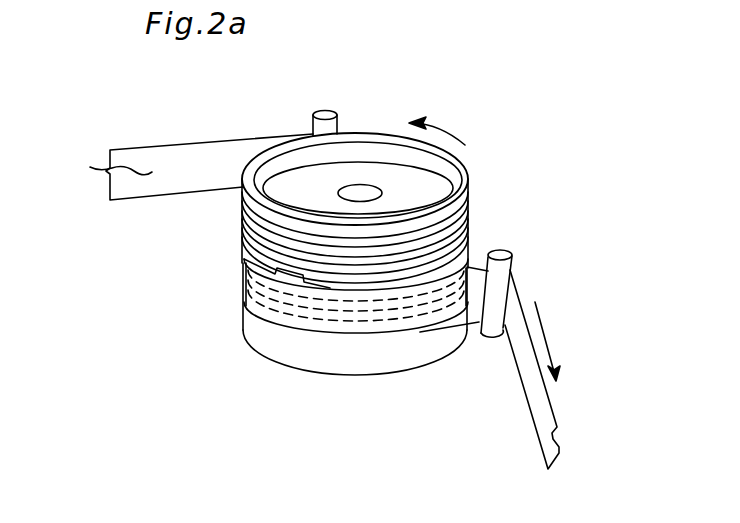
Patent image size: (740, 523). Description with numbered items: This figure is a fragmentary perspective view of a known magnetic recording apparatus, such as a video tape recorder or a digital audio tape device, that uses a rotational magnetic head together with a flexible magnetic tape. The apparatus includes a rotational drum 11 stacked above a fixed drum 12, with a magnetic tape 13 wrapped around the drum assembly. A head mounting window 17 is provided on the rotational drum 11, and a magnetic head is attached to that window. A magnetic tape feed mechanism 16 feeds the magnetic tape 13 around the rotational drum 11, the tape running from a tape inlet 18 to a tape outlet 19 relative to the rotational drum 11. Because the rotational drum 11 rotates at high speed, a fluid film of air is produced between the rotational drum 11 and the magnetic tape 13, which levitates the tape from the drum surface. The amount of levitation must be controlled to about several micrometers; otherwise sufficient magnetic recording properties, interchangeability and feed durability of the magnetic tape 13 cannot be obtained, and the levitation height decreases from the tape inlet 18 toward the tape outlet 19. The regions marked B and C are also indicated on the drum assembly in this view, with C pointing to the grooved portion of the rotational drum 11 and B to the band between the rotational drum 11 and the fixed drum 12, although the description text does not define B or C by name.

The rotational drum 11 is at (438, 170).
The fixed drum 12 is at (335, 340).
The magnetic tape 13 is at (148, 178).
The magnetic tape feed mechanism 16 is at (112, 138).
The head mounting window 17 is at (250, 268).
The tape inlet 18 is at (312, 133).
The tape outlet 19 is at (428, 322).
The band B is at (298, 278).
The grooves C is at (478, 243).